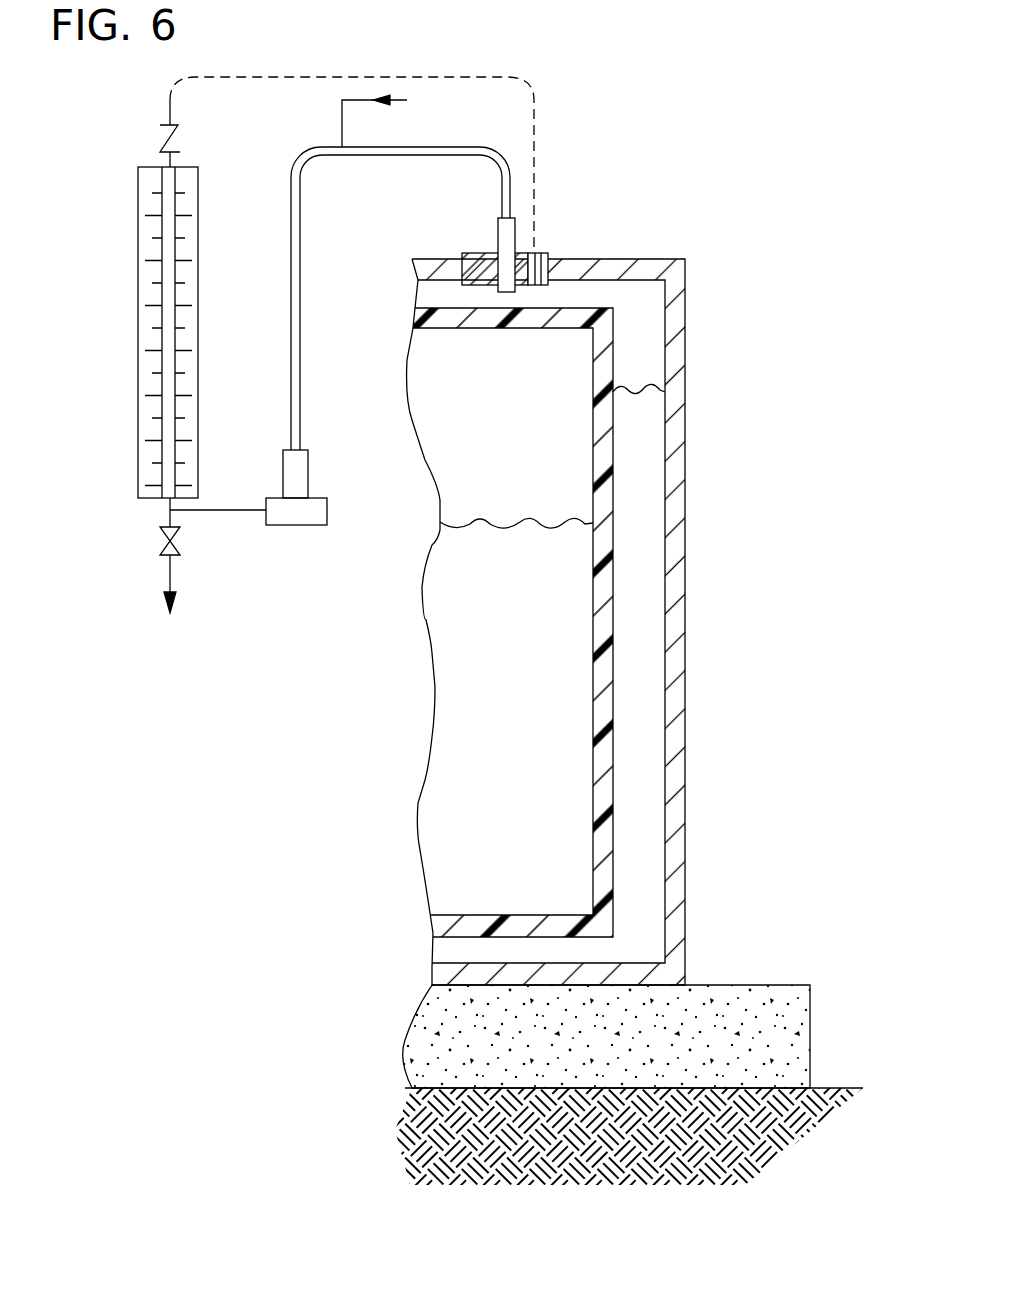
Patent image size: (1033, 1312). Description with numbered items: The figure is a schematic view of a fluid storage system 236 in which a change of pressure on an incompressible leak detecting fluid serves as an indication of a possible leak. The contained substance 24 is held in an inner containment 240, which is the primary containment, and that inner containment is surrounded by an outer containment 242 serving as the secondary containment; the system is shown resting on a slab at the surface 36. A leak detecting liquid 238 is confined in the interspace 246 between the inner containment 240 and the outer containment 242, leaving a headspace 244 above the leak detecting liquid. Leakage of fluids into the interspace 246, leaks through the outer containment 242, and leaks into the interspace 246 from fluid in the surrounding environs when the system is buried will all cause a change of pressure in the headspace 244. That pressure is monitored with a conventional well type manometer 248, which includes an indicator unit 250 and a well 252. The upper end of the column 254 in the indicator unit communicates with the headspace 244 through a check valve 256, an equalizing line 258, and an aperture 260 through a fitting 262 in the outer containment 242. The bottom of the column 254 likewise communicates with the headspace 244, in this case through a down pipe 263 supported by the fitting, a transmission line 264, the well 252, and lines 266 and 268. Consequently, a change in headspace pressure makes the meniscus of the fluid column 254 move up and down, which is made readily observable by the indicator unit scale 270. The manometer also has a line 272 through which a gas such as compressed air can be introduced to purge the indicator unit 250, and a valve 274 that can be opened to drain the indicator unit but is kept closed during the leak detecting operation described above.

The contained substance 24 is at (534, 601).
The surface 36 is at (840, 1088).
The fluid storage system 236 is at (582, 134).
The leak detecting liquid 238 is at (590, 622).
The inner containment 240 is at (597, 733).
The outer containment 242 is at (597, 622).
The headspace 244 is at (638, 312).
The interspace 246 is at (665, 840).
The manometer 248 is at (111, 332).
The indicator unit 250 is at (126, 241).
The well 252 is at (298, 525).
The column 254 is at (160, 290).
The check valve 256 is at (162, 140).
The equalizing line 258 is at (330, 77).
The aperture 260 is at (500, 243).
The fitting 262 is at (470, 253).
The down pipe 263 is at (498, 228).
The transmission line 264 is at (440, 147).
The line 266 is at (217, 513).
The line 268 is at (170, 505).
The scale 270 is at (145, 462).
The line 272 is at (342, 100).
The valve 274 is at (160, 545).